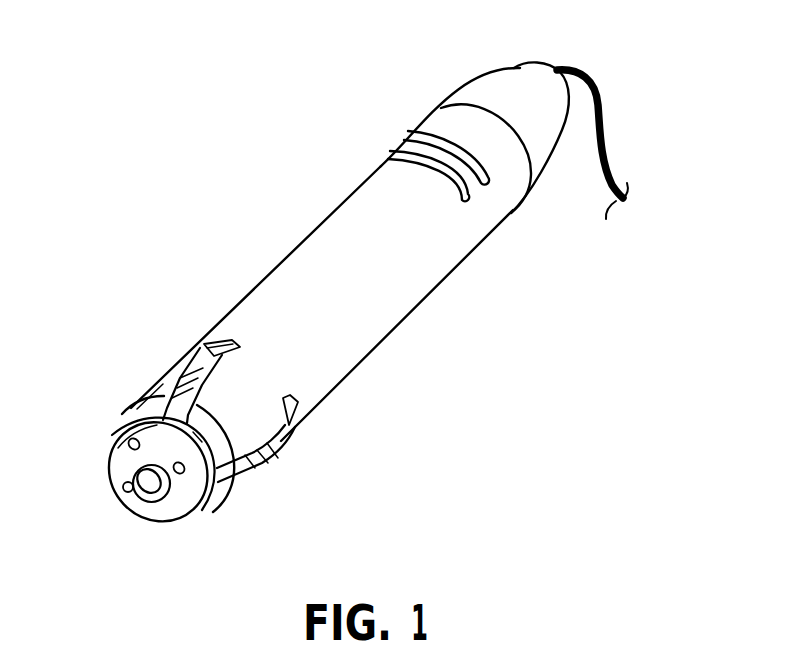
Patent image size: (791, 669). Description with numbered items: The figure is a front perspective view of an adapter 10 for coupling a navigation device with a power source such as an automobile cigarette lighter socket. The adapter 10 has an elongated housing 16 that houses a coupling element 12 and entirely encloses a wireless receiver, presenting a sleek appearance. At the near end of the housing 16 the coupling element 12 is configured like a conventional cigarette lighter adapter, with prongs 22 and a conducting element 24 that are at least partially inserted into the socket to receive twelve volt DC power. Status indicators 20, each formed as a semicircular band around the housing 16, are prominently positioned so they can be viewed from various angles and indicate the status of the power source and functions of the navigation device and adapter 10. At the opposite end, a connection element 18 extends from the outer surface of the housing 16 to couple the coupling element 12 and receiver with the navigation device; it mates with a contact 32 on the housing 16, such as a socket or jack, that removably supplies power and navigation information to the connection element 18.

The adapter 10 is at (225, 144).
The coupling element 12 is at (124, 389).
The housing 16 is at (373, 325).
The connection element 18 is at (605, 165).
The status indicators 20 is at (390, 152).
The prongs 22 is at (277, 433).
The conducting element 24 is at (150, 488).
The contact 32 is at (540, 72).